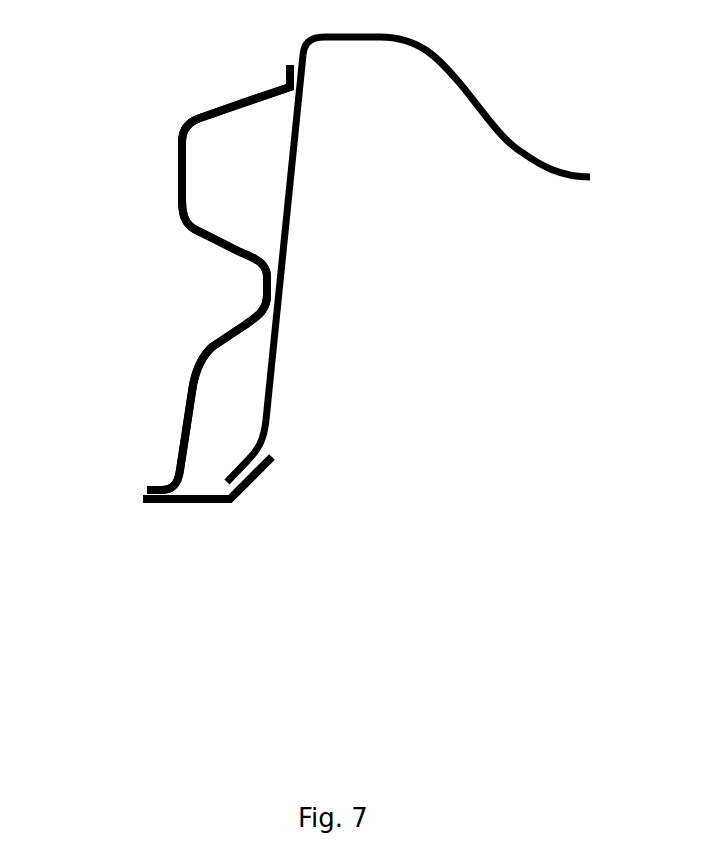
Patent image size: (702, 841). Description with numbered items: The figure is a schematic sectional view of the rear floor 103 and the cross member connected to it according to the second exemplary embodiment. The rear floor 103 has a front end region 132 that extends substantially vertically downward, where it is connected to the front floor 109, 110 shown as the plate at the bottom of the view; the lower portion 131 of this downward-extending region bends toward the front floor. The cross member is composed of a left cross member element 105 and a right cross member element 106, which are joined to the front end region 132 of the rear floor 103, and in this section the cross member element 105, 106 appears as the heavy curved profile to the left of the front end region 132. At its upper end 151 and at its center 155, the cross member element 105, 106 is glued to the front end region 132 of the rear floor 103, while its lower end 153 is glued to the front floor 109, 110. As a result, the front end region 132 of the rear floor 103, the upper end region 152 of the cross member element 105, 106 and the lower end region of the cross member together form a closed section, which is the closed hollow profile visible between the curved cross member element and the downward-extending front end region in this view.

The rear floor 103 is at (401, 259).
The left cross member element 105 is at (163, 261).
The right cross member element 106 is at (163, 261).
The front floor 109 is at (207, 525).
The front floor 110 is at (193, 503).
The lower flange portion 131 is at (240, 467).
The front end region 132 is at (293, 157).
The upper end 151 is at (278, 73).
The upper end region 152 is at (185, 140).
The lower end 153 is at (157, 484).
The center 155 is at (263, 288).